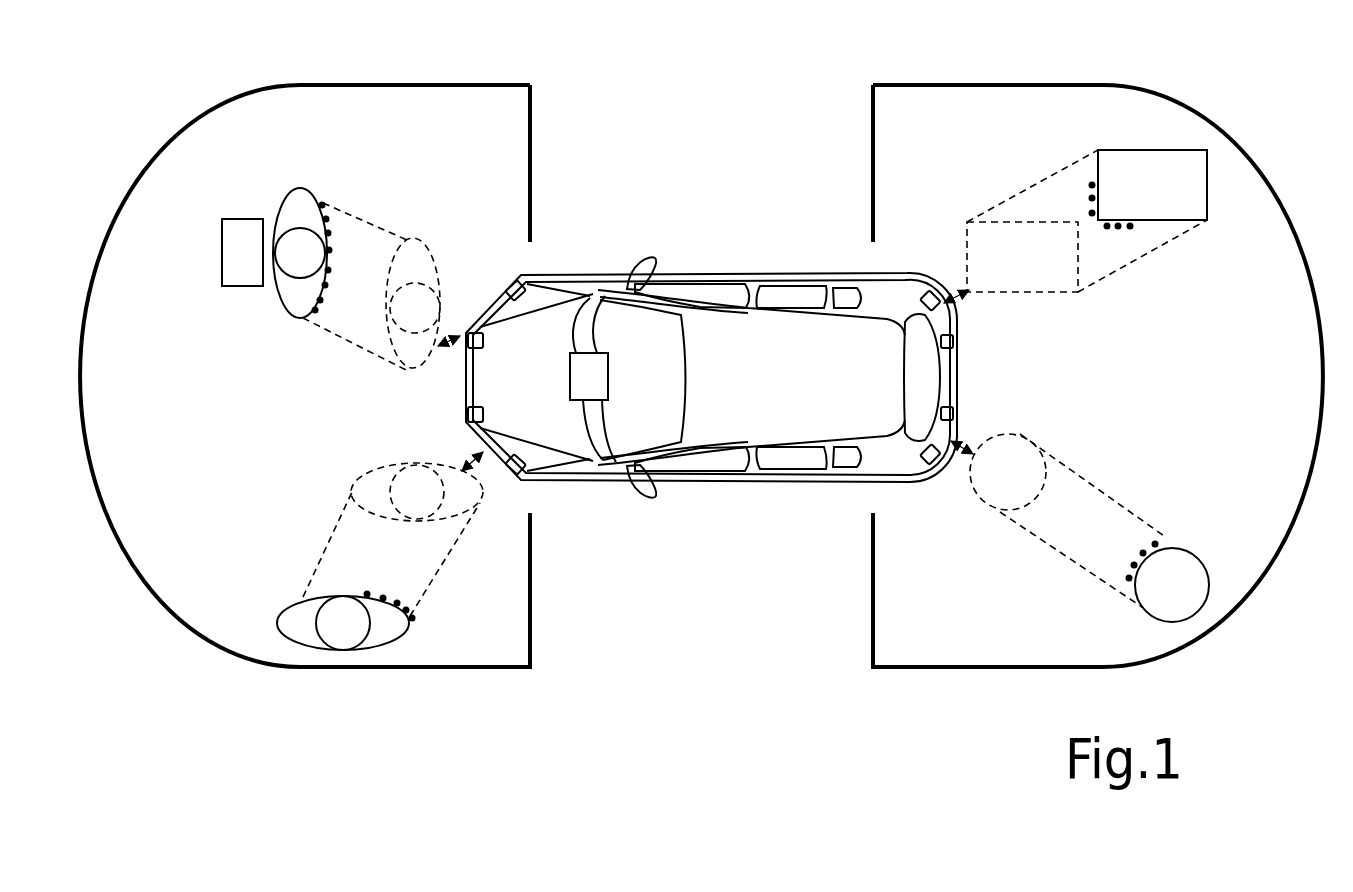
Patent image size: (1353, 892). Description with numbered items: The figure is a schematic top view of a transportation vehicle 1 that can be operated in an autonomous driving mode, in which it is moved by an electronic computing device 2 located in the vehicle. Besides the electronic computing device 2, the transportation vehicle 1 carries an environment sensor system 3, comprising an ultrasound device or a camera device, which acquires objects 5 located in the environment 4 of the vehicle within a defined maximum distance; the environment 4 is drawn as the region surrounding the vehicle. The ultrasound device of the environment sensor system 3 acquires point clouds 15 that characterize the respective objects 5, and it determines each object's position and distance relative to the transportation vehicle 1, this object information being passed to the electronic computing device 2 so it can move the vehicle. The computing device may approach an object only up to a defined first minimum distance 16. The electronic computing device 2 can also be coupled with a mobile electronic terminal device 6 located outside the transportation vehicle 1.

The transportation vehicle 1 is at (756, 273).
The electronic computing device 2 is at (592, 366).
The environment sensor system 3 is at (506, 480).
The environment 4 is at (465, 671).
The objects 5 is at (303, 189).
The mobile electronic terminal device 6 is at (243, 219).
The point clouds 15 is at (352, 203).
The first minimum distance 16 is at (450, 345).